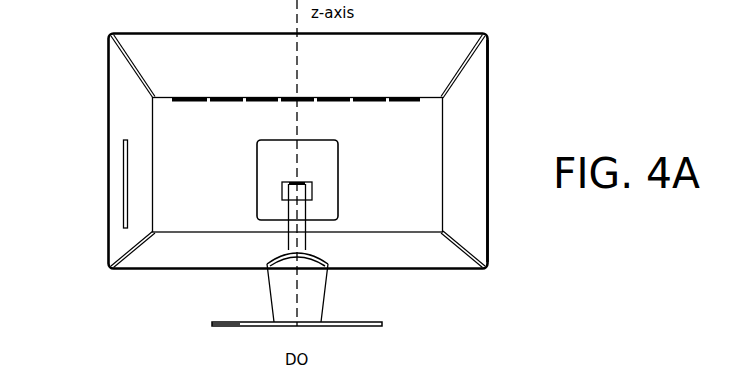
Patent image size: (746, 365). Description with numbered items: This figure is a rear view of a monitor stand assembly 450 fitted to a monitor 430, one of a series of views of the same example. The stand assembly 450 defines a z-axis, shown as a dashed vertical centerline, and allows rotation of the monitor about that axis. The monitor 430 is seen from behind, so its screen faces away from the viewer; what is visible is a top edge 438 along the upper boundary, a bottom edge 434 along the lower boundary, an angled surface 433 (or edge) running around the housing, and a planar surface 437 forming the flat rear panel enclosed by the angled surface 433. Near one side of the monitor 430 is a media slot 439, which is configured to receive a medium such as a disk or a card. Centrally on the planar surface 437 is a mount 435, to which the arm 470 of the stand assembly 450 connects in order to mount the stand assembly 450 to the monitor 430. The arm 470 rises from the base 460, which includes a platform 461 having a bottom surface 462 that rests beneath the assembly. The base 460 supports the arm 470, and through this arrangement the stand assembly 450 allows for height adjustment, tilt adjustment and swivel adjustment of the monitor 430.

The monitor 430 is at (478, 128).
The angled surface 433 is at (260, 249).
The bottom edge 434 is at (470, 270).
The mount 435 is at (312, 183).
The planar surface 437 is at (298, 165).
The top edge 438 is at (470, 35).
The media slot 439 is at (125, 165).
The monitor stand assembly 450 is at (178, 305).
The base 460 is at (322, 293).
The platform 461 is at (382, 322).
The bottom surface 462 is at (228, 326).
The arm 470 is at (292, 240).